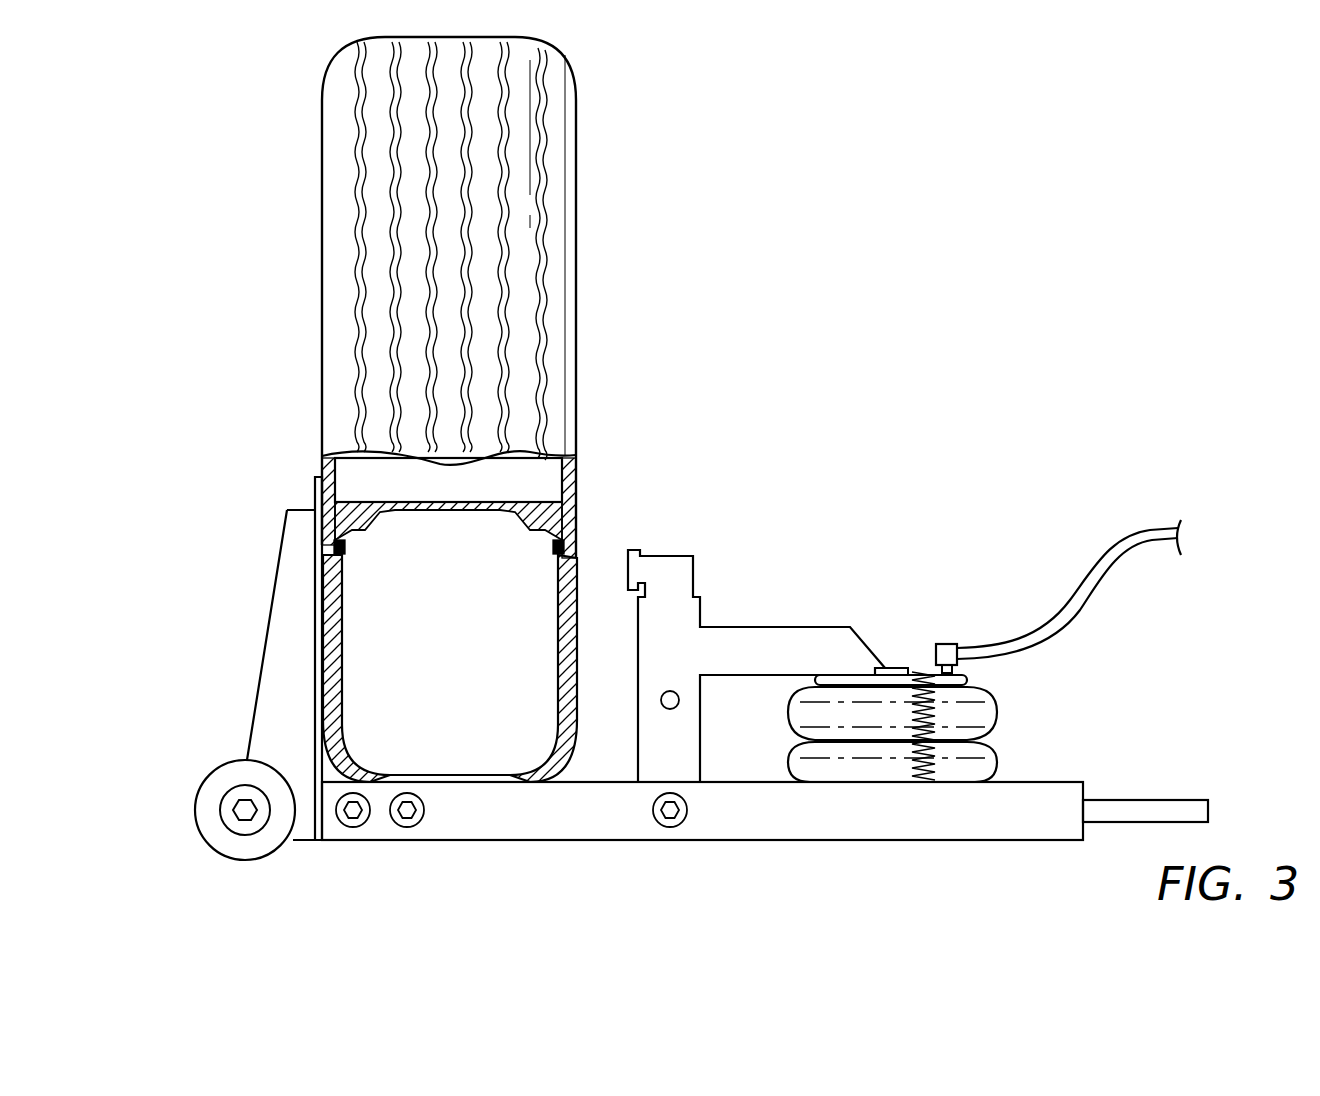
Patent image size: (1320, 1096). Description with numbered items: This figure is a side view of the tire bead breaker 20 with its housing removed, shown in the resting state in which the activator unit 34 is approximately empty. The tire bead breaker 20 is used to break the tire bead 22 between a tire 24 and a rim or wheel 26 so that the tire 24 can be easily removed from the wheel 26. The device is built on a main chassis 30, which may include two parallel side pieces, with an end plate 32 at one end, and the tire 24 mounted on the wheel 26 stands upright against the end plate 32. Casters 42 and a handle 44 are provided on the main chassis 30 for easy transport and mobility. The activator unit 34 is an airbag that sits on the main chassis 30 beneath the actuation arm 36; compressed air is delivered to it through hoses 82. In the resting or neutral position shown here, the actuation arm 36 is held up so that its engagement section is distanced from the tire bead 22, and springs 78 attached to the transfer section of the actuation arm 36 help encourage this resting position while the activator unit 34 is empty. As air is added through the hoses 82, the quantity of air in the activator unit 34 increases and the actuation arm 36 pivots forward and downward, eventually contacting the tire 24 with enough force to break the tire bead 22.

The tire bead breaker 20 is at (750, 444).
The tire bead 22 is at (553, 555).
The tire 24 is at (555, 60).
The rim or wheel 26 is at (578, 543).
The main chassis 30 is at (583, 822).
The end plate 32 is at (312, 490).
The activator unit 34 is at (998, 714).
The actuation arm 36 is at (756, 627).
The casters 42 is at (195, 810).
The handle 44 is at (1177, 800).
The springs 78 is at (970, 689).
The hoses 82 is at (1100, 550).